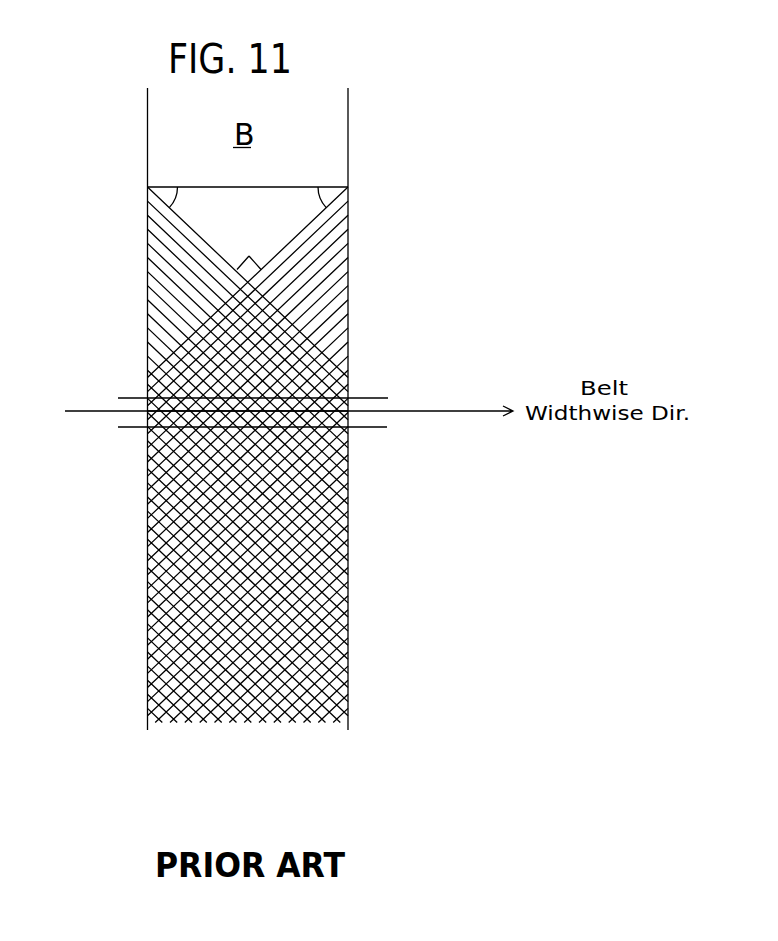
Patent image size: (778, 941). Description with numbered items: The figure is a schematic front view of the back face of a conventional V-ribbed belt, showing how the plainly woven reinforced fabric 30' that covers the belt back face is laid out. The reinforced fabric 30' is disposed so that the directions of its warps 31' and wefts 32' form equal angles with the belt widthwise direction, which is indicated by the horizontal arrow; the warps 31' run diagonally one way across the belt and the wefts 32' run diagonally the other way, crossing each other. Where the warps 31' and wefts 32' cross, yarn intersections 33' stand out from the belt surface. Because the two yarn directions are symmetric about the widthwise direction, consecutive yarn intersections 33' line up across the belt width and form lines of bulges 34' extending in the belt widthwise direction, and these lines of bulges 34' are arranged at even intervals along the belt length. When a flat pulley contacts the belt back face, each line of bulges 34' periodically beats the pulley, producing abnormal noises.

The reinforced fabric 30' is at (297, 455).
The warps 31' is at (373, 208).
The wefts 32' is at (122, 206).
The yarn intersections 33' is at (235, 405).
The lines of bulges 34' is at (285, 413).